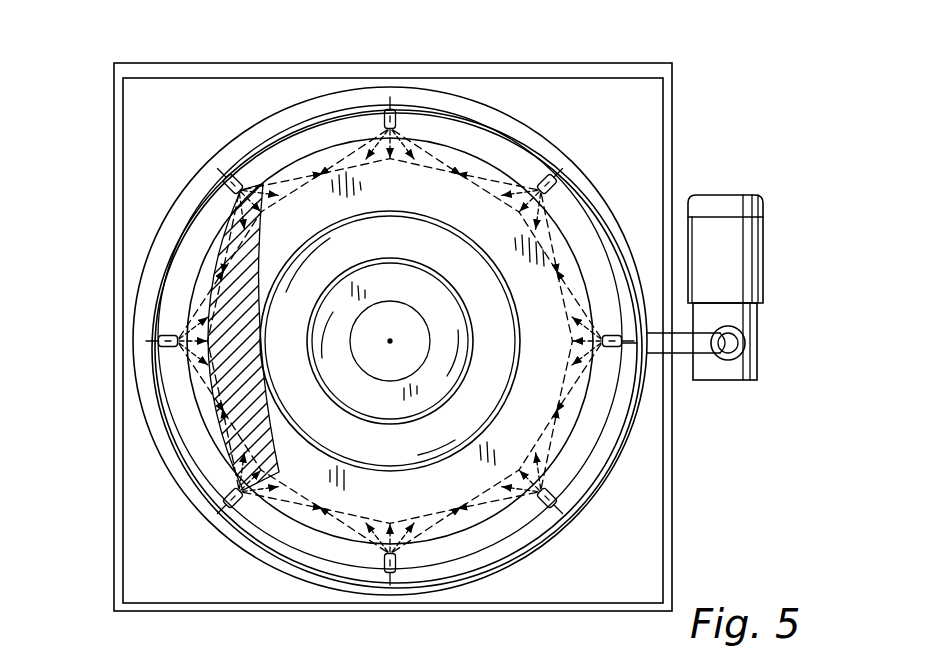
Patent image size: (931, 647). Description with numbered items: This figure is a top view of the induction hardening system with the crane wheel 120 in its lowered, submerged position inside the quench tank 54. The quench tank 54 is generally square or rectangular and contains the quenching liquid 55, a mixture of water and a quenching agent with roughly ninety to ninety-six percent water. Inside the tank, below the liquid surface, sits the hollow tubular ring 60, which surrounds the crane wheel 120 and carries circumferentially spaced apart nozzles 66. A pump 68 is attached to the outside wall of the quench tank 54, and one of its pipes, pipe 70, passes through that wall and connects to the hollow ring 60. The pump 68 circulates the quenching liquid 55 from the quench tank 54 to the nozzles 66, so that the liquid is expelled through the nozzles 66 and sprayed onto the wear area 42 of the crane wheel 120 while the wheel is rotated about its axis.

The wear area 42 is at (205, 407).
The quench tank 54 is at (607, 60).
The quenching liquid 55 is at (185, 577).
The hollow tubular ring 60 is at (624, 428).
The nozzles 66 is at (396, 107).
The pump 68 is at (753, 257).
The pipe 70 is at (707, 348).
The crane wheel 120 is at (410, 504).